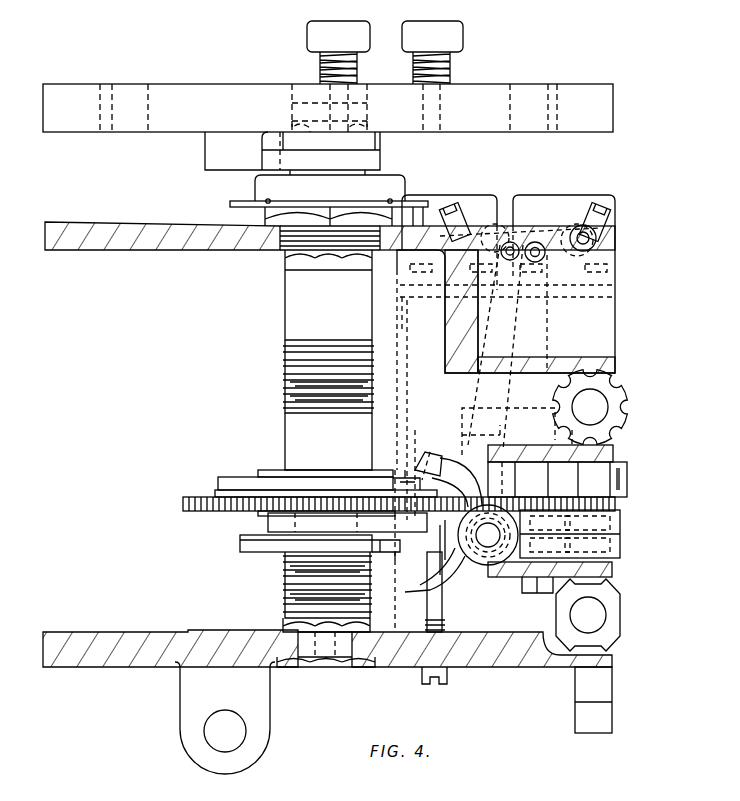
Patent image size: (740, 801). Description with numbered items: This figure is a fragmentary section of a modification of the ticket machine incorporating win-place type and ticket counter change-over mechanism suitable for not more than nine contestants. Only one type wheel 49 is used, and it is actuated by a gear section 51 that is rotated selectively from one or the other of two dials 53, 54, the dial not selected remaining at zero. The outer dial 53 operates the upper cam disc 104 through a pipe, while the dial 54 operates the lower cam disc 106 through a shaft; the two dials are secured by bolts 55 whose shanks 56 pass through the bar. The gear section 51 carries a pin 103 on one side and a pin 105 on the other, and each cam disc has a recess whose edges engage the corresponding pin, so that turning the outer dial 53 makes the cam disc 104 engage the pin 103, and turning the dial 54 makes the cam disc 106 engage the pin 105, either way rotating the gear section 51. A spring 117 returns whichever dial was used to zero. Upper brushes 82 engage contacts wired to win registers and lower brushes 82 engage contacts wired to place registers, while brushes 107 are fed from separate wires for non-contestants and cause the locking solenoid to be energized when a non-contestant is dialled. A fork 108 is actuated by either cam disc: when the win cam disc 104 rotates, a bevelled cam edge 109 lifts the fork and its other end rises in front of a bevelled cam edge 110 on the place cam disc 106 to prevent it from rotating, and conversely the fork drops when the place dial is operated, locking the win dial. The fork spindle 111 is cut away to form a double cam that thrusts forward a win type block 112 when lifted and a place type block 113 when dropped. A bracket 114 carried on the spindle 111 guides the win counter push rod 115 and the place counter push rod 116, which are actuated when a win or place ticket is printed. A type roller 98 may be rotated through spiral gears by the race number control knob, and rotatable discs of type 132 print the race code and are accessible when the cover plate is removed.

The type wheel 49 is at (618, 472).
The gear section 51 is at (183, 502).
The outer dial 53 is at (328, 108).
The dial 54 is at (523, 108).
The bolts 55 is at (385, 52).
The bolt shanks 56 is at (335, 97).
The brushes 82 is at (288, 384).
The type roller 98 is at (620, 616).
The pin 103 is at (410, 478).
The cam disc 104 is at (218, 482).
The pin 105 is at (398, 562).
The cam disc 106 is at (240, 546).
The brushes 107 is at (288, 595).
The fork 108 is at (452, 584).
The bevelled cam edge 109 is at (414, 468).
The bevelled cam edge 110 is at (402, 592).
The fork spindle 111 is at (476, 537).
The win type block 112 is at (616, 525).
The place type block 113 is at (616, 549).
The bracket 114 is at (462, 414).
The win counter push rod 115 is at (485, 385).
The place counter push rod 116 is at (540, 337).
The spring 117 is at (268, 522).
The rotatable discs of type 132 is at (610, 385).